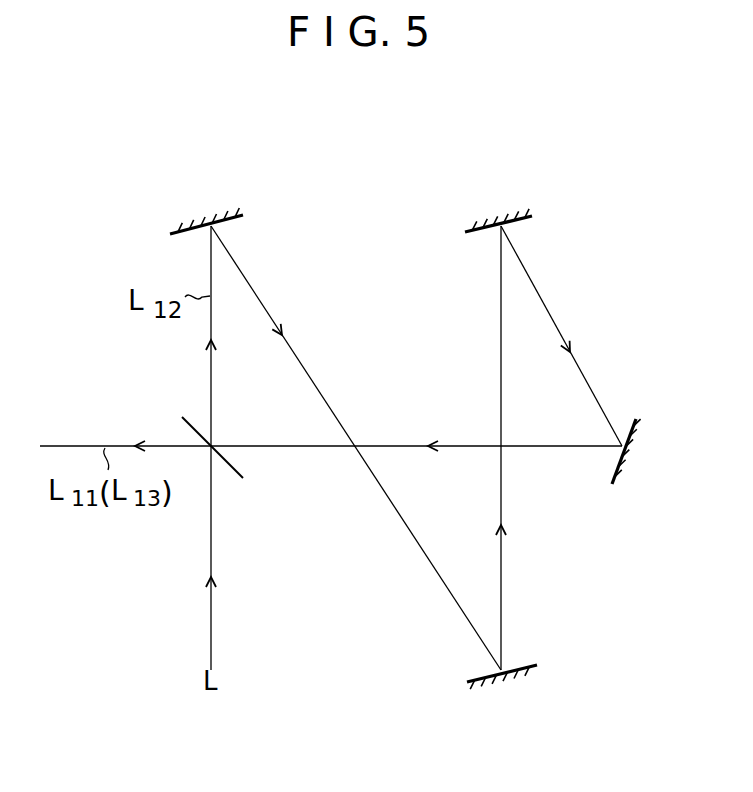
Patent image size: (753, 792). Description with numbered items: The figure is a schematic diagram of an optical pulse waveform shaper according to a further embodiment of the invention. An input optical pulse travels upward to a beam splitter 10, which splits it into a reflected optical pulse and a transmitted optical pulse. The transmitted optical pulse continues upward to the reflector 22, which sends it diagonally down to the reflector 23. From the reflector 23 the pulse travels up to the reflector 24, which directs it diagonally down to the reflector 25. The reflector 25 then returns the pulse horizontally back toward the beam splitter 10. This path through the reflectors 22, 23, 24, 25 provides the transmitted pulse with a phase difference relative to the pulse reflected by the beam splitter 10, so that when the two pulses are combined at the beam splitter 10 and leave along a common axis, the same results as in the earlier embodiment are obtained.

The reflector 22 is at (210, 207).
The reflector 24 is at (502, 207).
The reflector 23 is at (520, 686).
The reflector 25 is at (645, 426).
The beam splitter 10 is at (237, 463).